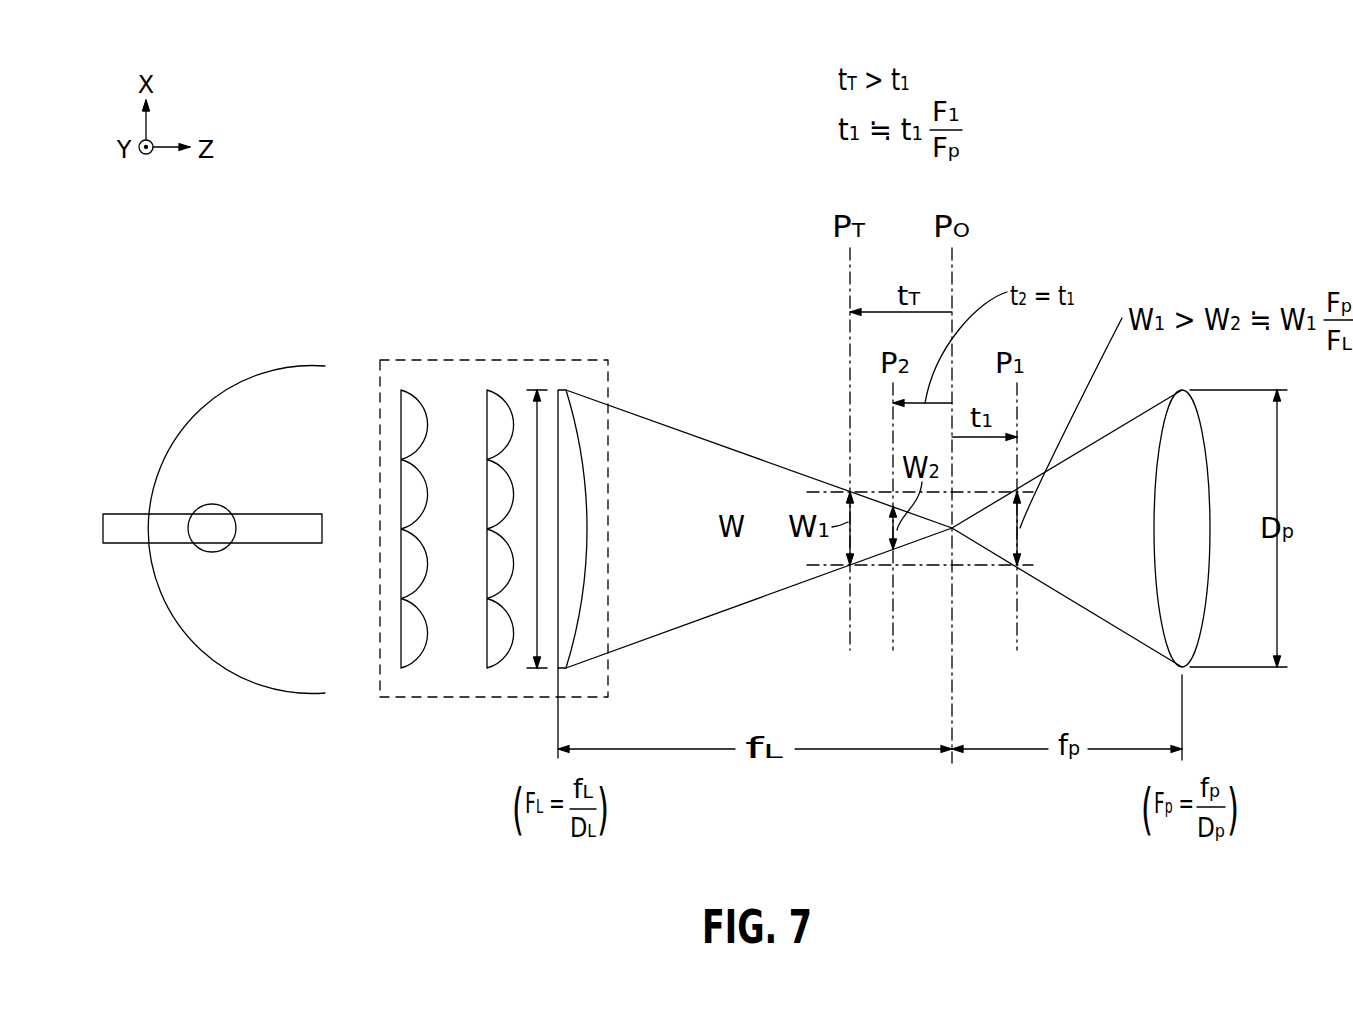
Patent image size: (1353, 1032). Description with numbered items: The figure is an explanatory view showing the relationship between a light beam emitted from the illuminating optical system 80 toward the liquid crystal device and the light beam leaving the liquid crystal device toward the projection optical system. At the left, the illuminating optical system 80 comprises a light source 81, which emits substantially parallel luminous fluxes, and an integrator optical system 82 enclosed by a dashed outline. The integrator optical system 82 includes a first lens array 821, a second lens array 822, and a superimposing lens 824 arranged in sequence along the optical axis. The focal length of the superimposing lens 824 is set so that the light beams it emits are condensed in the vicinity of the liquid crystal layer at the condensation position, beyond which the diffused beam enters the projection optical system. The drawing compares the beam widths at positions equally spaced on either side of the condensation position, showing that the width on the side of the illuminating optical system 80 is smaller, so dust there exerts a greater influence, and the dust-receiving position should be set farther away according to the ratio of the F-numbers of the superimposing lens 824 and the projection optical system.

The illuminating optical system 80 is at (365, 288).
The light source 81 is at (173, 632).
The integrator optical system 82 is at (440, 358).
The first lens array 821 is at (408, 668).
The second lens array 822 is at (492, 668).
The superimposing lens 824 is at (582, 465).